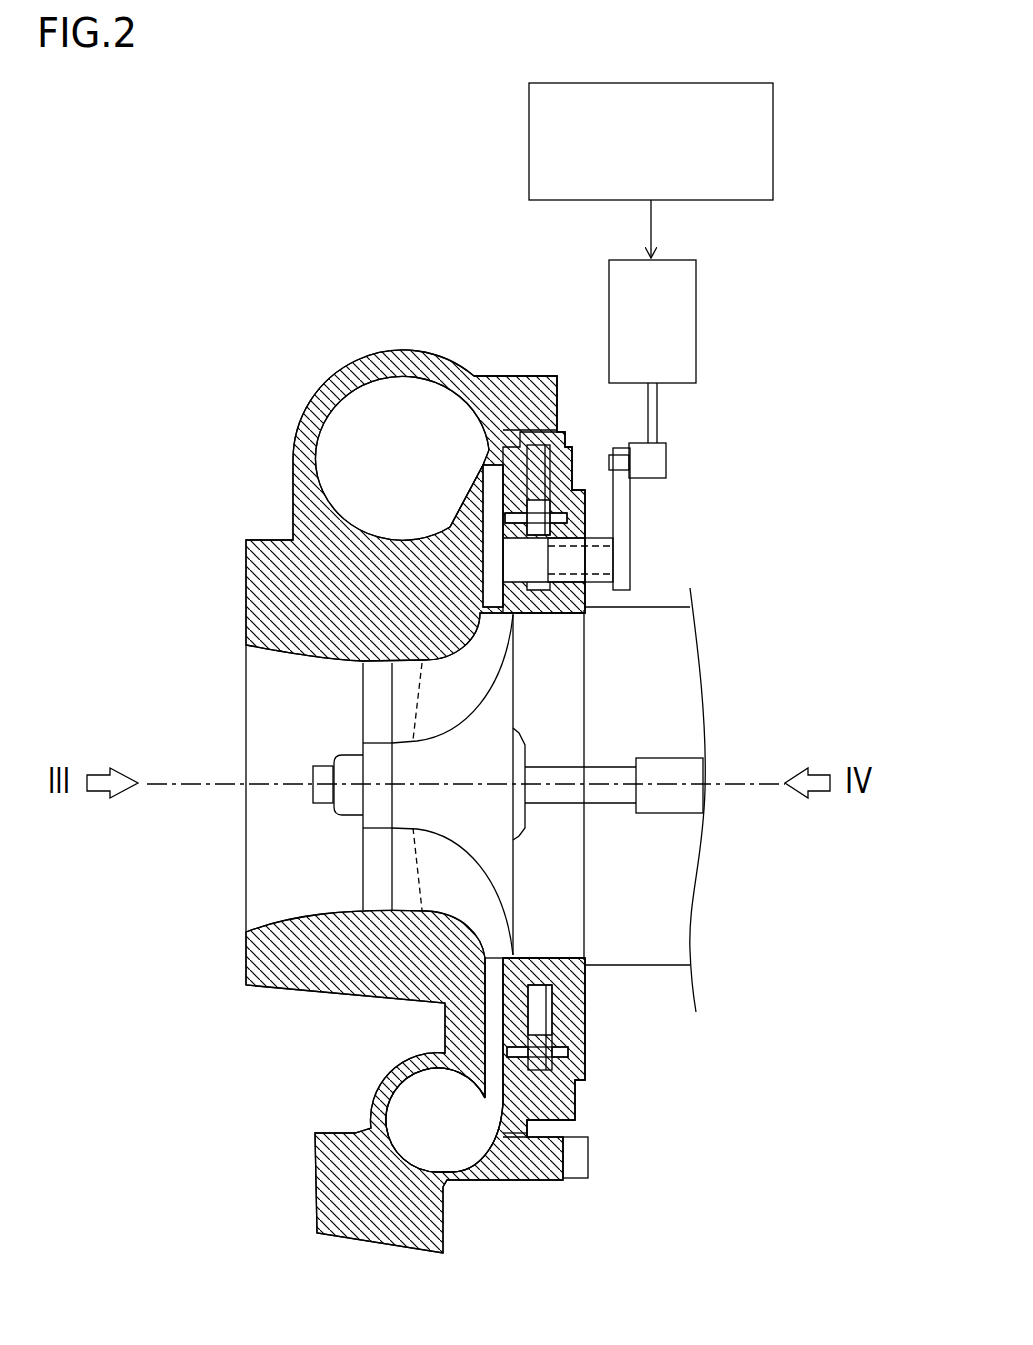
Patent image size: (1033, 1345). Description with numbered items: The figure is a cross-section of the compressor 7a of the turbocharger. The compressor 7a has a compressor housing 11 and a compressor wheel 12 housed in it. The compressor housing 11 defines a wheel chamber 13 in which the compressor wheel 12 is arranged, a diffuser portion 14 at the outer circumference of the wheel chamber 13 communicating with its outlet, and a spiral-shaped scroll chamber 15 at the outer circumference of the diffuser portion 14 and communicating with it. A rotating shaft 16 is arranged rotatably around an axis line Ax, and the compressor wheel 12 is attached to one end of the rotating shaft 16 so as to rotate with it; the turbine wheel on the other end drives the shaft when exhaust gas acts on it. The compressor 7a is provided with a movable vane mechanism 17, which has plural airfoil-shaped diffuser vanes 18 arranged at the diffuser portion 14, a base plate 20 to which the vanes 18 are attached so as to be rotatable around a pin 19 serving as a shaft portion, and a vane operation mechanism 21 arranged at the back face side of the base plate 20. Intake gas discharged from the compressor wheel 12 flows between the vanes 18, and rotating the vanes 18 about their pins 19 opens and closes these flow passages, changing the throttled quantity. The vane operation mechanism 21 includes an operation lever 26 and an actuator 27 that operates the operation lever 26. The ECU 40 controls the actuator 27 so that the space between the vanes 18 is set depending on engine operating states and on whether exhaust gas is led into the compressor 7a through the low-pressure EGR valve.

The compressor 7a is at (260, 292).
The compressor housing 11 is at (279, 990).
The compressor wheel 12 is at (447, 822).
The wheel chamber 13 is at (456, 692).
The diffuser portion 14 is at (492, 508).
The scroll chamber 15 is at (409, 414).
The rotating shaft 16 is at (680, 813).
The movable vane mechanism 17 is at (661, 1064).
The diffuser vane 18 is at (494, 440).
The pin 19 is at (523, 446).
The base plate 20 is at (493, 520).
The vane operation mechanism 21 is at (682, 494).
The operation lever 26 is at (630, 531).
The actuator 27 is at (696, 335).
The ECU 40 is at (529, 143).
The axis line Ax is at (150, 786).